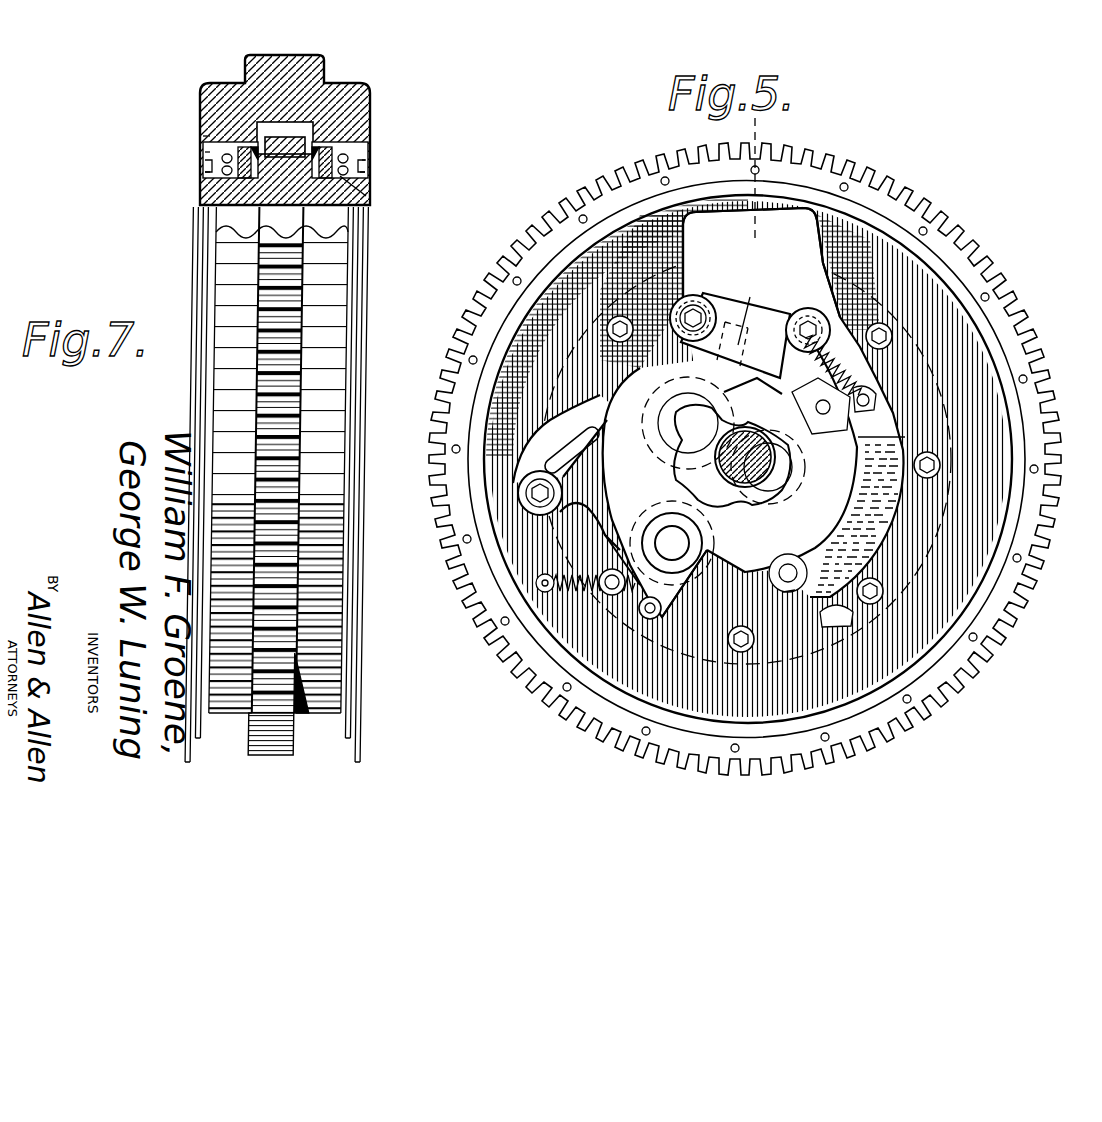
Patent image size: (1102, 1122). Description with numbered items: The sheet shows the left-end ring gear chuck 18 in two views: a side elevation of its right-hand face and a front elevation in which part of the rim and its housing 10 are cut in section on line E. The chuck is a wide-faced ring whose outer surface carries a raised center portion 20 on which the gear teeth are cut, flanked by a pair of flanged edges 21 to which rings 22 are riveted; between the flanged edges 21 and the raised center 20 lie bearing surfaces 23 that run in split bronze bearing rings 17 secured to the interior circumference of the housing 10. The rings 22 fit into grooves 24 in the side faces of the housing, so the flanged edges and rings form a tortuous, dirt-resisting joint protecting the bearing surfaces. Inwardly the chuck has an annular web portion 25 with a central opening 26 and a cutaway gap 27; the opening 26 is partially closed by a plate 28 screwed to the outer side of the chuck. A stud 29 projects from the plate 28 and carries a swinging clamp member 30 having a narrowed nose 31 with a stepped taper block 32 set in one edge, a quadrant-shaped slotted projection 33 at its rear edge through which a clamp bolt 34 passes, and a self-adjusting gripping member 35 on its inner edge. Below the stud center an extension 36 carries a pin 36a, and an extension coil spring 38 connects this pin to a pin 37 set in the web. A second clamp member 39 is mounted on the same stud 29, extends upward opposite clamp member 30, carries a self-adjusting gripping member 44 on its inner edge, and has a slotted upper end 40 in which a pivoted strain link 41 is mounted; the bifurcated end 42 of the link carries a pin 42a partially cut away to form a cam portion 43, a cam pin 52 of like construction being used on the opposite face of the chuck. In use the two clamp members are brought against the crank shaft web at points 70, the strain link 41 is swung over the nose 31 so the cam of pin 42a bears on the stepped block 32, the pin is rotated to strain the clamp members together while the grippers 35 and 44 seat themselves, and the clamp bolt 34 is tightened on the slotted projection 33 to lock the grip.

In FIG. 7, the hub 10 is at (365, 94).
In FIG. 7, the bearing rings 17 is at (247, 140).
In FIG. 5, the ring gear chuck 18 is at (712, 640).
In FIG. 7, the ring gear chuck 18 is at (372, 356).
In FIG. 5, the raised center portion 20 is at (972, 251).
In FIG. 7, the raised center portion 20 is at (207, 157).
In FIG. 7, the flanged edges 21 is at (362, 174).
In FIG. 5, the rings 22 is at (994, 314).
In FIG. 7, the rings 22 is at (368, 160).
In FIG. 7, the bearing surfaces 23 is at (368, 206).
In FIG. 7, the grooves 24 is at (204, 136).
In FIG. 5, the annular web portion 25 is at (645, 668).
In FIG. 7, the annular web portion 25 is at (305, 223).
In FIG. 5, the central opening 26 is at (783, 592).
In FIG. 5, the cutaway portion 27 is at (777, 236).
In FIG. 7, the cutaway portion 27 is at (288, 222).
In FIG. 5, the plate 28 is at (708, 600).
In FIG. 5, the stud 29 is at (675, 543).
In FIG. 5, the swinging clamp member 30 is at (655, 492).
In FIG. 5, the nose 31 is at (756, 308).
In FIG. 5, the stepped taper block 32 is at (722, 310).
In FIG. 5, the quadrant shaped projection 33 is at (543, 453).
In FIG. 5, the clamp bolt 34 is at (572, 450).
In FIG. 5, the self adjusting gripping member 35 is at (670, 422).
In FIG. 5, the extension 36 is at (645, 612).
In FIG. 5, the pin 36a is at (630, 652).
In FIG. 5, the pin 37 is at (536, 583).
In FIG. 5, the extension coil spring 38 is at (640, 592).
In FIG. 5, the second clamp member 39 is at (803, 523).
In FIG. 5, the slotted upper end 40 is at (782, 444).
In FIG. 5, the strain link 41 is at (712, 350).
In FIG. 5, the bifurcated end portion 42 is at (722, 352).
In FIG. 5, the pin 42a is at (693, 294).
In FIG. 5, the cam portion 43 is at (728, 330).
In FIG. 5, the self adjusting gripping member 44 is at (777, 487).
In FIG. 5, the cam pin 52 is at (820, 284).
In FIG. 5, the contact points 70 is at (695, 423).
In FIG. 5, the section line E is at (763, 178).